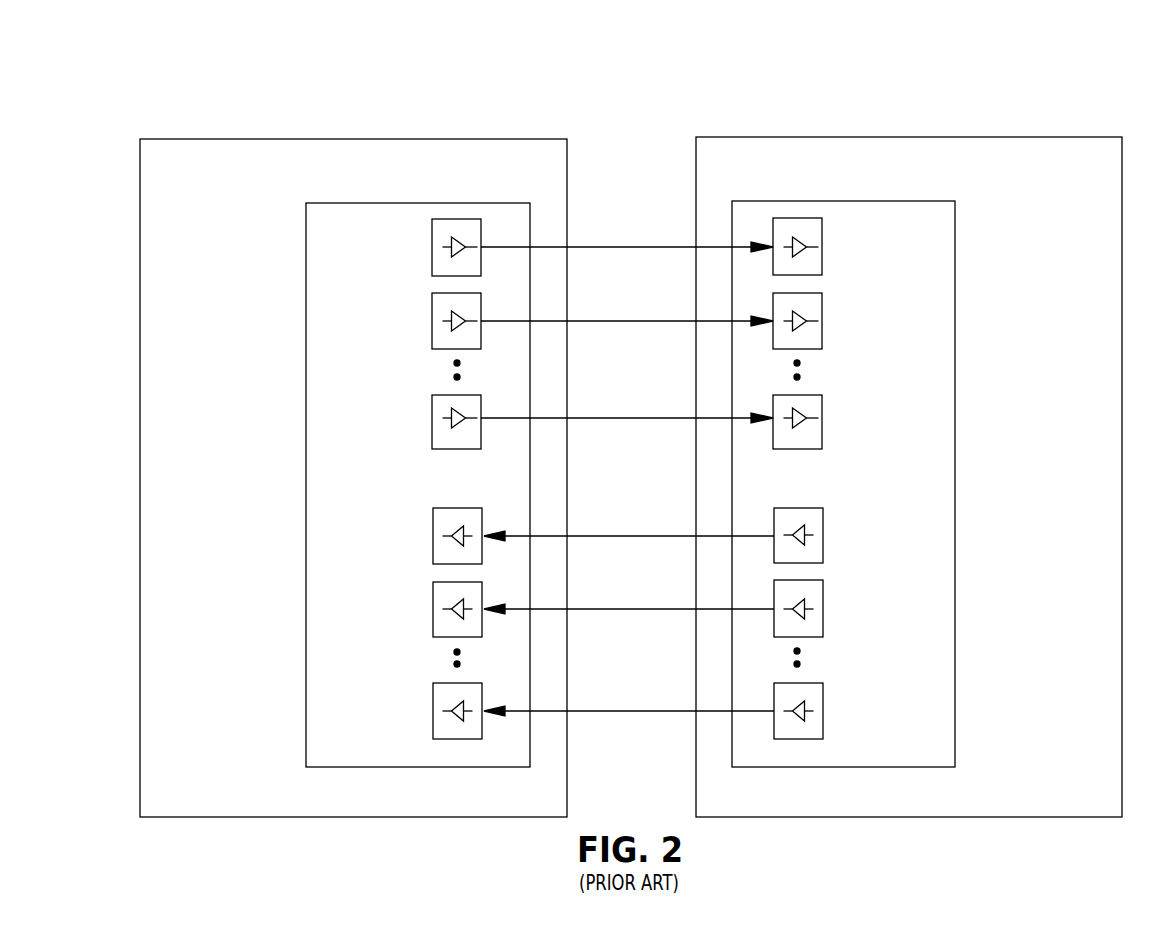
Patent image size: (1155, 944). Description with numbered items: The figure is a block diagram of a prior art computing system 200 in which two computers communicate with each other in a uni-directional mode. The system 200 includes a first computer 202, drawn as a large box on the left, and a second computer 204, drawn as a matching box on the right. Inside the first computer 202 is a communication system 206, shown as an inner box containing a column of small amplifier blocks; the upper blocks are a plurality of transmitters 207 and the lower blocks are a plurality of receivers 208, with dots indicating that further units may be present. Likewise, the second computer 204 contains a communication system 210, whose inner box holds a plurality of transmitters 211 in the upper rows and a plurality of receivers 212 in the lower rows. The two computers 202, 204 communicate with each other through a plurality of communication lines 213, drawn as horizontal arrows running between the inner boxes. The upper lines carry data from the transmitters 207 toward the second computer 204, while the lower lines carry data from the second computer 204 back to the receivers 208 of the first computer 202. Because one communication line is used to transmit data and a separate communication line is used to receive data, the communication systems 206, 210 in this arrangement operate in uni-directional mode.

The computing system 200 is at (1078, 89).
The first computer 202 is at (354, 139).
The second computer 204 is at (907, 137).
The communication system 206 is at (417, 202).
The transmitters 207 is at (378, 308).
The receivers 208 is at (377, 661).
The communication system 210 is at (840, 201).
The transmitters 211 is at (888, 308).
The receivers 212 is at (892, 660).
The communication lines 213 is at (633, 210).